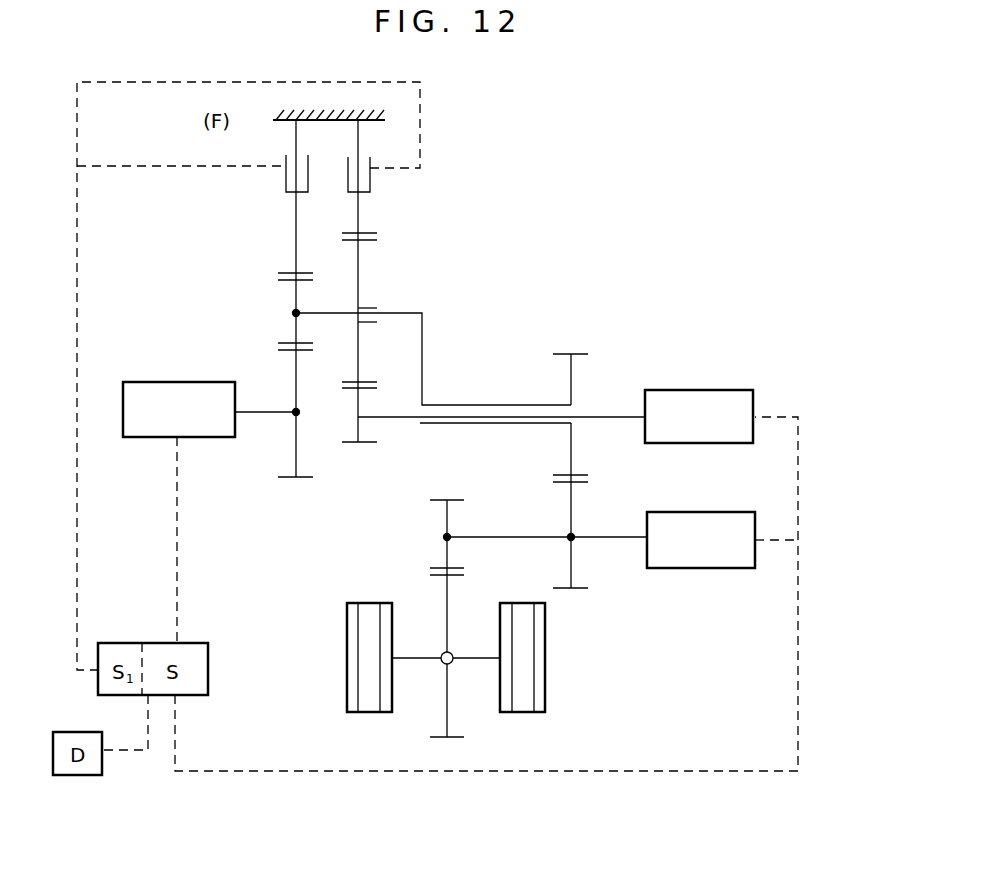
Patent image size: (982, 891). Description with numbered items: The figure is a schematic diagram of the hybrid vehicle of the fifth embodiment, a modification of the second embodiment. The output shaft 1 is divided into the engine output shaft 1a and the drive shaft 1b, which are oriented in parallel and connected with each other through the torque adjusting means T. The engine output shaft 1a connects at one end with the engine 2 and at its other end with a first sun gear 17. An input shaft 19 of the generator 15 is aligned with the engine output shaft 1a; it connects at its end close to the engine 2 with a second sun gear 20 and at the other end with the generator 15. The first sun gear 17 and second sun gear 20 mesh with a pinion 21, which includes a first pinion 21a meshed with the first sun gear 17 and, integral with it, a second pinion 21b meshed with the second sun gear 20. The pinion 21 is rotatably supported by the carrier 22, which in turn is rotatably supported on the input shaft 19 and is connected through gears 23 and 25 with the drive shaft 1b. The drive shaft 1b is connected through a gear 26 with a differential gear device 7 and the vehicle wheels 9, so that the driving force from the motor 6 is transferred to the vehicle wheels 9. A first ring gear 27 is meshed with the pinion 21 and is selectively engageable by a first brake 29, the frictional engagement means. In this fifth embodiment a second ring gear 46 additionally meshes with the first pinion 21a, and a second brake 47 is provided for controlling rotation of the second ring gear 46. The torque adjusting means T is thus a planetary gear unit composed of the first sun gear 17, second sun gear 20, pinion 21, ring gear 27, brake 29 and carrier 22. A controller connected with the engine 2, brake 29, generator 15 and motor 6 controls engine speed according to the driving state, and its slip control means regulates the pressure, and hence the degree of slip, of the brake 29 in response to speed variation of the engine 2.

The output shaft 1 is at (447, 618).
The engine output shaft 1a is at (268, 414).
The drive shaft 1b is at (500, 536).
The engine 2 is at (162, 437).
The motor 6 is at (725, 568).
The differential gear device 7 is at (441, 664).
The vehicle wheels 9 is at (370, 712).
The generator 15 is at (732, 390).
The first sun gear 17 is at (285, 481).
The input shaft 19 is at (618, 415).
The second sun gear 20 is at (350, 445).
The pinion 21 is at (288, 331).
The first pinion 21a is at (288, 284).
The second pinion 21b is at (370, 243).
The carrier 22 is at (422, 365).
The gear 23 is at (578, 350).
The gear 25 is at (575, 591).
The gear 26 is at (438, 498).
The ring gear 27 is at (360, 212).
The brake 29 is at (370, 178).
The second ring gear 46 is at (296, 233).
The second brake 47 is at (286, 162).
The torque adjusting means T is at (396, 286).